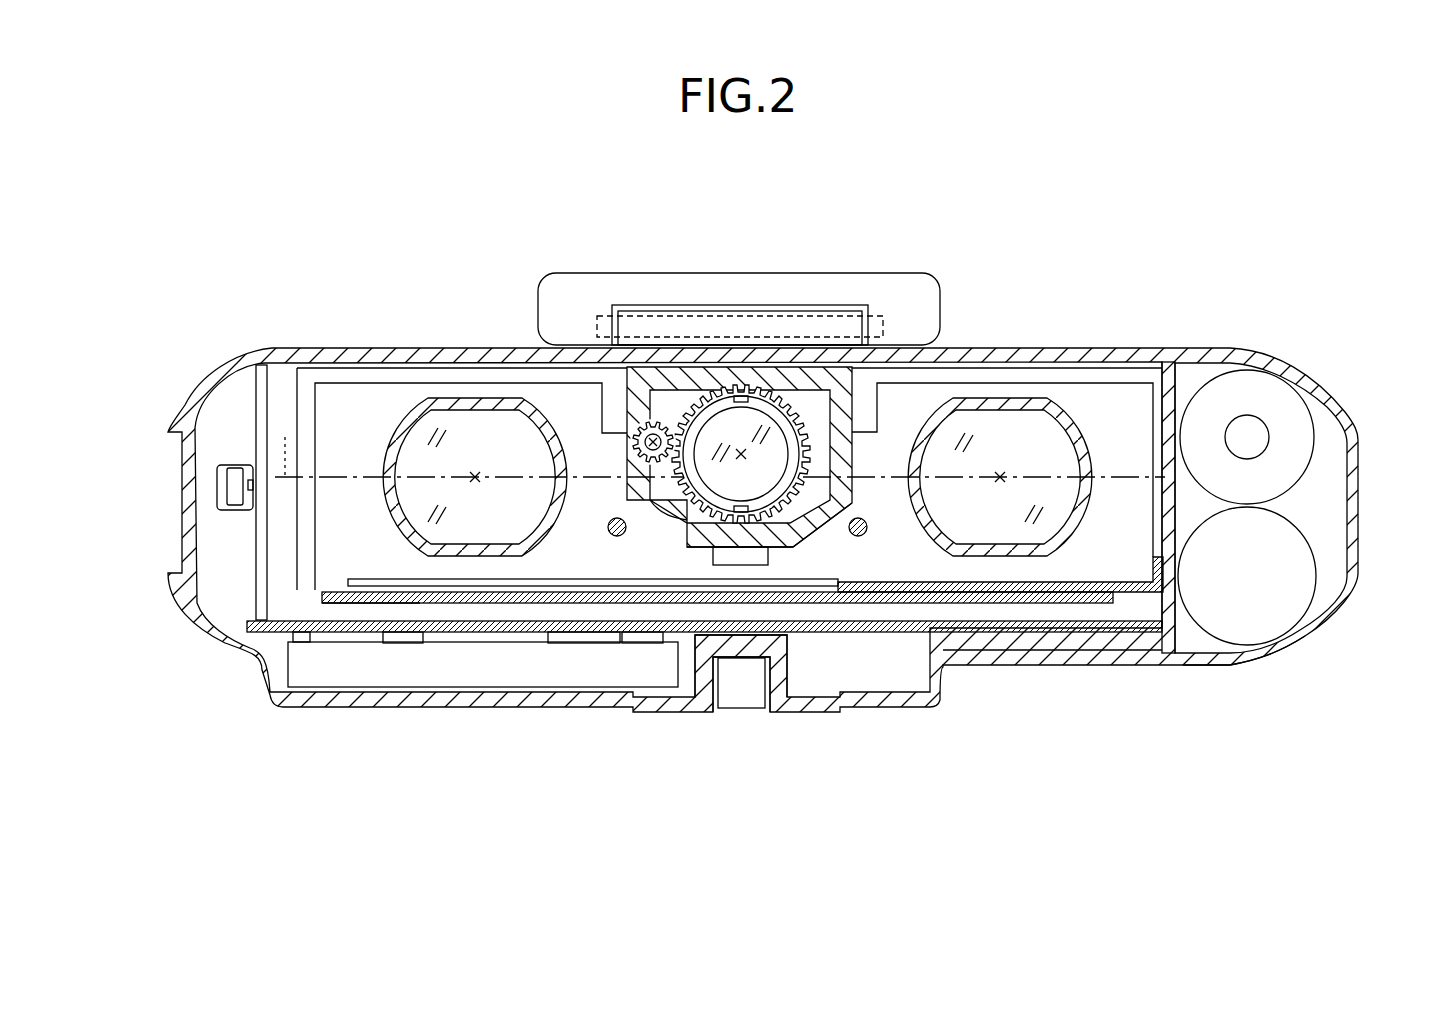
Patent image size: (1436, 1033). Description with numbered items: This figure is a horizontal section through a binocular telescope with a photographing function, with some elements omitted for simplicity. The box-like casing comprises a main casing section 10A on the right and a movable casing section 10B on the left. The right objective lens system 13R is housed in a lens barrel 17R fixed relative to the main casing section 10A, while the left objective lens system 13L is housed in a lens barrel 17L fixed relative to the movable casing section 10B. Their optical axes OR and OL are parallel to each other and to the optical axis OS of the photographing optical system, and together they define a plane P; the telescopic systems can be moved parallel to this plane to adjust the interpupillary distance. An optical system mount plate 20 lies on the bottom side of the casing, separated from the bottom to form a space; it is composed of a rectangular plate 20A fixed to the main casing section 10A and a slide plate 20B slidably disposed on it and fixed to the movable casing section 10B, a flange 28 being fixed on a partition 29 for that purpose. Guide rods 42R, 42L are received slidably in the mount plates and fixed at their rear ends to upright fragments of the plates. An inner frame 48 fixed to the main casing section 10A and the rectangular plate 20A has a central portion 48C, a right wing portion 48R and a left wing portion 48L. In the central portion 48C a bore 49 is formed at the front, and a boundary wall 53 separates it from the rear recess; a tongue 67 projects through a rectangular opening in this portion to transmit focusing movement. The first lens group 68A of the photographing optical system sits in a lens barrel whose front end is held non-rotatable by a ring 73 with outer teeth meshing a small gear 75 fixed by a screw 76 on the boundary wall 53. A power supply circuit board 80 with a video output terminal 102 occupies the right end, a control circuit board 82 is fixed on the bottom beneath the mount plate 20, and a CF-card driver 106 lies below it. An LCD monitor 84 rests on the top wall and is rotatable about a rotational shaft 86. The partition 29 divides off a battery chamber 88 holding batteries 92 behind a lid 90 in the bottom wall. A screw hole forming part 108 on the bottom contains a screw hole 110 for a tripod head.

The main casing section 10A is at (213, 364).
The movable casing section 10B is at (1332, 376).
The objective lens system 13R is at (455, 418).
The objective lens system 13L is at (987, 426).
The lens barrel 17R is at (383, 451).
The lens barrel 17L is at (1135, 423).
The optical system mount plate 20 is at (392, 577).
The rectangular plate 20A is at (361, 598).
The slide plate 20B is at (1121, 578).
The flange 28 is at (1140, 580).
The partition 29 is at (1170, 392).
The guide rod 42R is at (613, 536).
The guide rod 42L is at (866, 535).
The inner frame 48 is at (908, 398).
The right wing portion 48R is at (388, 370).
The left wing portion 48L is at (1127, 371).
The central portion 48C is at (612, 436).
The bore 49 is at (688, 520).
The boundary wall 53 is at (812, 400).
The tongue 67 is at (770, 556).
The first lens group 68A is at (750, 418).
The ring 73 is at (812, 509).
The small gear 75 is at (657, 480).
The screw 76 is at (628, 492).
The power supply circuit board 80 is at (253, 417).
The control circuit board 82 is at (552, 643).
The LCD monitor 84 is at (738, 266).
The rotational shaft 86 is at (887, 327).
The battery chamber 88 is at (1320, 421).
The lid 90 is at (1297, 640).
The batteries 92 is at (1296, 458).
The video output terminal 102 is at (222, 466).
The CF-card driver 106 is at (520, 677).
The screw hole forming part 108 is at (780, 667).
The screw hole 110 is at (722, 683).
The plane P is at (285, 440).
The optical axis OR is at (476, 473).
The optical axis OL is at (1003, 474).
The optical axis OS is at (741, 453).